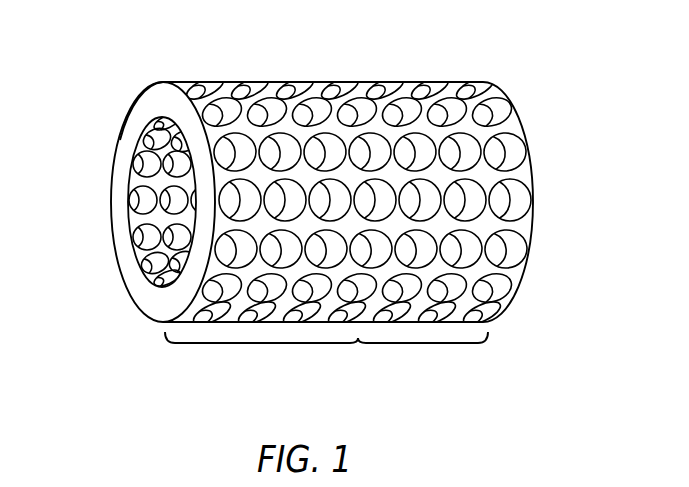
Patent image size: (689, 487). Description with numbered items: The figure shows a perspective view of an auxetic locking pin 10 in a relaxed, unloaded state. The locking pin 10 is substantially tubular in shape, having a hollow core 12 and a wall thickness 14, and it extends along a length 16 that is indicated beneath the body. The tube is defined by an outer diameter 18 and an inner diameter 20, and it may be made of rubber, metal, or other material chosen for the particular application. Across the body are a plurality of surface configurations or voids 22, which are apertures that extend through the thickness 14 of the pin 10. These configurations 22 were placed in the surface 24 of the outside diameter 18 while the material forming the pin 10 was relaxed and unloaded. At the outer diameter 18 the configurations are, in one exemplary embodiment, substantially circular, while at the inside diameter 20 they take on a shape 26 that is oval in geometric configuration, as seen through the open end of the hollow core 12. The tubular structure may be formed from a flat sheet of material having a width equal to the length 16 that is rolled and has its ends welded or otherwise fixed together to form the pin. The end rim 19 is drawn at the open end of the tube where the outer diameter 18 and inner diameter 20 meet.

The auxetic locking pin 10 is at (105, 86).
The hollow core 12 is at (183, 238).
The thickness 14 is at (117, 127).
The length 16 is at (326, 358).
The outer diameter 18 is at (470, 82).
The annular end rim 19 is at (158, 97).
The inner diameter 20 is at (135, 217).
The surface configurations or voids 22 is at (512, 167).
The surface 24 is at (523, 228).
The oval shape 26 is at (157, 172).